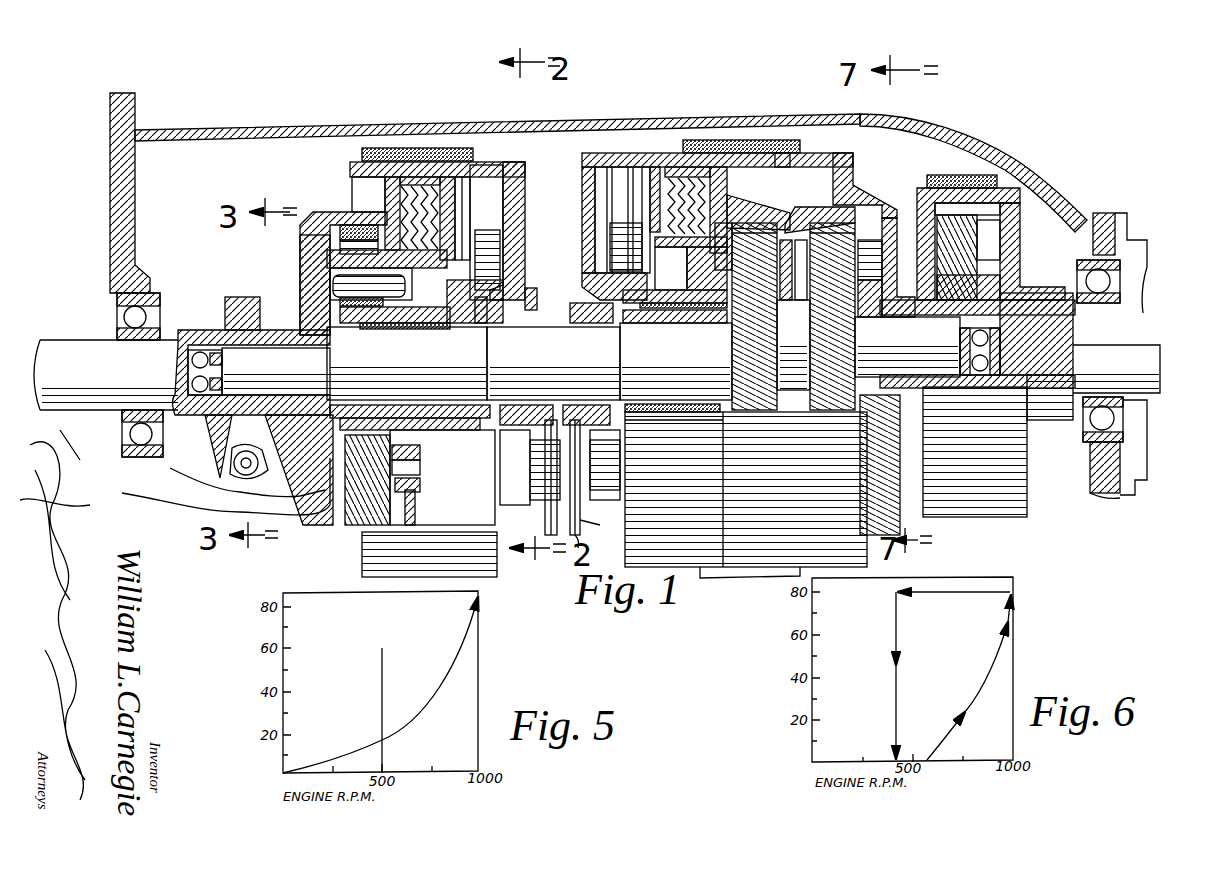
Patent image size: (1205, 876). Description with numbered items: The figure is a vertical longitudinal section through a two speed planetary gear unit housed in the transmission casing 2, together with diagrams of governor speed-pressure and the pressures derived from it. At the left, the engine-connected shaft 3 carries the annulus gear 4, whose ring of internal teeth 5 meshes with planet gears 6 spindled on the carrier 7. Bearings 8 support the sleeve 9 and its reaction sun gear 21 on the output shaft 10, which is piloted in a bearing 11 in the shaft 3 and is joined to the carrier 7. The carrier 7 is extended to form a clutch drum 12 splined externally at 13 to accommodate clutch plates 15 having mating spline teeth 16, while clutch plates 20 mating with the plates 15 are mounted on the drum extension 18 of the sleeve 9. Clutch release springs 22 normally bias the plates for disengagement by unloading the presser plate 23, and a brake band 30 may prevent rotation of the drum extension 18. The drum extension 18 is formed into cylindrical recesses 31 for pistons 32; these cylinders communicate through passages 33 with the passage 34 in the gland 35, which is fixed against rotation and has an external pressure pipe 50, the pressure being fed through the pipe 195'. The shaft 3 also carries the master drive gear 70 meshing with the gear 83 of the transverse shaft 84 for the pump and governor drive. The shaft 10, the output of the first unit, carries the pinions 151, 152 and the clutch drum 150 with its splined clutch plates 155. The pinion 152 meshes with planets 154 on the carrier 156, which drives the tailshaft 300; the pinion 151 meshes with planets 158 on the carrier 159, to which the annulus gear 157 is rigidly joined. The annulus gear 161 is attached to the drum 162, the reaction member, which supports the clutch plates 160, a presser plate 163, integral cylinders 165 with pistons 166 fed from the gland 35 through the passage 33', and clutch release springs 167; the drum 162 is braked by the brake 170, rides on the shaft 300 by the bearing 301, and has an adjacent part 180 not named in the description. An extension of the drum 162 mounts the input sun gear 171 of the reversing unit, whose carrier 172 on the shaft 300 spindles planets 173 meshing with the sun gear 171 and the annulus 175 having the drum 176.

In FIG. 1, the transmission casing 2 is at (285, 131).
In FIG. 1, the engine-connected shaft 3 is at (55, 350).
In FIG. 1, the annulus gear 4 is at (322, 216).
In FIG. 1, the ring of internal teeth 5 is at (300, 240).
In FIG. 1, the planet gears 6 is at (405, 505).
In FIG. 1, the carrier 7 is at (330, 273).
In FIG. 1, the bearings 8 is at (440, 332).
In FIG. 1, the sleeve 9 is at (465, 426).
In FIG. 1, the output shaft 10 is at (308, 322).
In FIG. 1, the bearing 11 is at (192, 347).
In FIG. 1, the clutch drum 12 is at (420, 455).
In FIG. 1, the external splines 13 is at (420, 470).
In FIG. 1, the clutch plates 15 is at (420, 490).
In FIG. 1, the spline teeth 16 is at (432, 252).
In FIG. 5, the spline teeth 16 is at (380, 685).
In FIG. 1, the drum extension 18 is at (480, 165).
In FIG. 1, the clutch plates 20 is at (388, 200).
In FIG. 1, the reaction sun gear 21 is at (338, 300).
In FIG. 1, the clutch release springs 22 is at (412, 177).
In FIG. 1, the presser plate 23 is at (447, 177).
In FIG. 1, the brake band 30 is at (366, 148).
In FIG. 1, the cylindrical recesses 31 is at (515, 175).
In FIG. 1, the pistons 32 is at (490, 165).
In FIG. 1, the passages 33 is at (533, 340).
In FIG. 1, the passage 33' is at (596, 534).
In FIG. 1, the passage 34 is at (512, 425).
In FIG. 1, the gland 35 is at (531, 305).
In FIG. 1, the external pressure pipe 50 is at (555, 405).
In FIG. 1, the master drive gear 70 is at (226, 312).
In FIG. 1, the gear 83 is at (232, 478).
In FIG. 1, the transverse shaft 84 is at (245, 477).
In FIG. 1, the clutch drum 150 is at (690, 273).
In FIG. 1, the pinion 151 is at (770, 413).
In FIG. 1, the pinion 152 is at (822, 398).
In FIG. 1, the planets 154 is at (800, 305).
In FIG. 1, the clutch plates 155 is at (732, 205).
In FIG. 1, the carrier 156 is at (888, 225).
In FIG. 1, the annulus gear 157 is at (858, 200).
In FIG. 1, the planets 158 is at (792, 207).
In FIG. 1, the carrier 159 is at (800, 232).
In FIG. 1, the clutch plates 160 is at (712, 167).
In FIG. 1, the annulus gear 161 is at (760, 245).
In FIG. 1, the drum 162 is at (633, 167).
In FIG. 1, the presser plate 163 is at (655, 167).
In FIG. 1, the cylinders 165 is at (600, 160).
In FIG. 1, the pistons 166 is at (617, 178).
In FIG. 1, the clutch release springs 167 is at (684, 175).
In FIG. 1, the brake 170 is at (745, 140).
In FIG. 1, the input sun gear 171 is at (975, 290).
In FIG. 1, the carrier 172 is at (990, 235).
In FIG. 1, the planets 173 is at (985, 248).
In FIG. 1, the annulus 175 is at (980, 200).
In FIG. 1, the drum 176 is at (1012, 188).
In FIG. 1, the lining 180 is at (955, 178).
In FIG. 1, the pipe 195' is at (559, 477).
In FIG. 1, the tailshaft 300 is at (1140, 305).
In FIG. 1, the bearing 301 is at (920, 335).